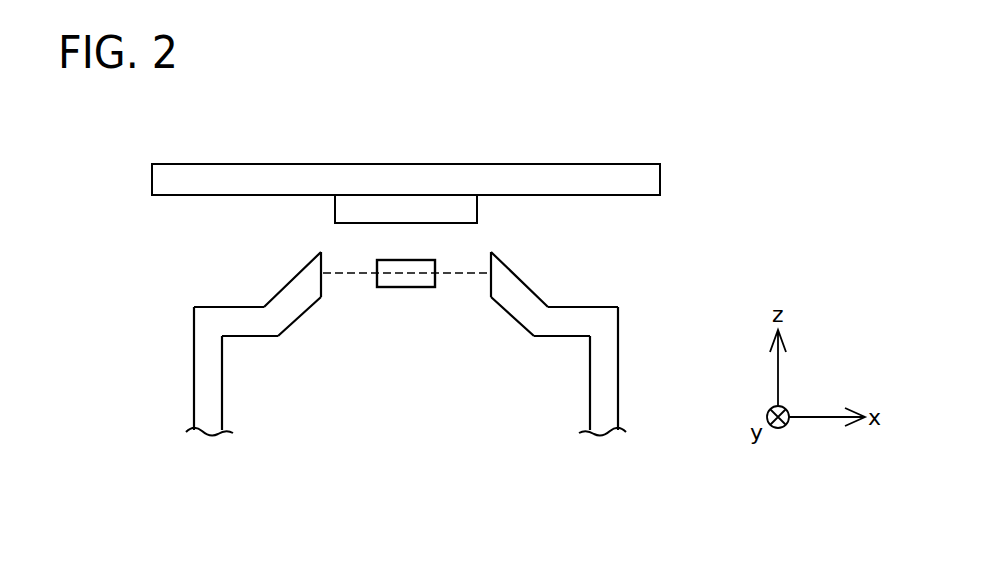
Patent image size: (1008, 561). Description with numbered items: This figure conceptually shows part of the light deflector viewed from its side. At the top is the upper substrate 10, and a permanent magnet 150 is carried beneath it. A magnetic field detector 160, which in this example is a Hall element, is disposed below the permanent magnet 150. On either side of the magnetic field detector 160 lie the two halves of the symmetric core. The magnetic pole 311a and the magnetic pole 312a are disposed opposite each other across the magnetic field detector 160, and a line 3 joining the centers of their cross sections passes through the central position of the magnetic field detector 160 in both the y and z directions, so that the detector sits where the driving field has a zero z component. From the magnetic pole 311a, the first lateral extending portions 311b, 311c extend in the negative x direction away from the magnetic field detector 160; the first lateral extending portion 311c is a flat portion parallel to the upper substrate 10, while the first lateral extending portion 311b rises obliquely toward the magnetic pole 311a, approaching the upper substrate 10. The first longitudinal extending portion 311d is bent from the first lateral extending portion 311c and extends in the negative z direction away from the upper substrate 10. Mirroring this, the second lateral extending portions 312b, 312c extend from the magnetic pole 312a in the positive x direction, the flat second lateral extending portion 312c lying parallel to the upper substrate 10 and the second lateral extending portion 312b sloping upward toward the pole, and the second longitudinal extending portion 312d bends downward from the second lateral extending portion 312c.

The upper substrate 10 is at (640, 183).
The permanent magnet 150 is at (427, 207).
The magnetic field detector 160 is at (405, 279).
The line 3 is at (463, 273).
The magnetic pole 311a is at (326, 263).
The first lateral extending portion 311b is at (298, 288).
The first lateral extending portion 311c is at (247, 320).
The first longitudinal extending portion 311d is at (208, 377).
The magnetic pole 312a is at (601, 255).
The second lateral extending portion 312b is at (609, 292).
The second lateral extending portion 312c is at (631, 309).
The second longitudinal extending portion 312d is at (653, 371).